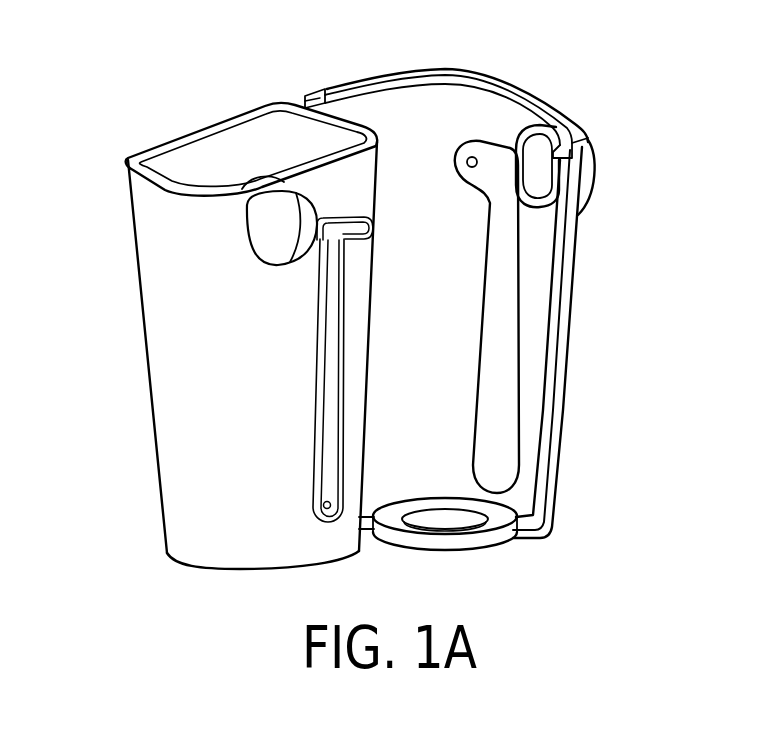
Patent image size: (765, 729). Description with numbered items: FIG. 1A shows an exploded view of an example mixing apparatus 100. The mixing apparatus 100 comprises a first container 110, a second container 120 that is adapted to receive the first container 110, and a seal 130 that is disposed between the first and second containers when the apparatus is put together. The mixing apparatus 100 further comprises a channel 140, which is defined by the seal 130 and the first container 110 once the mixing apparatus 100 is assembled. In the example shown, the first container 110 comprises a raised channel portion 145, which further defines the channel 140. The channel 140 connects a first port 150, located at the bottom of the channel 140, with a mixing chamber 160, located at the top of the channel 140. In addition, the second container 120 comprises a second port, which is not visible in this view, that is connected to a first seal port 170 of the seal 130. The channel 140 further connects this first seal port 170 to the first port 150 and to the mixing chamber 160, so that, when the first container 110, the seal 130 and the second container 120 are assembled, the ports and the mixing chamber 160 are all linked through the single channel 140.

The mixing apparatus 100 is at (132, 83).
The first container 110 is at (240, 136).
The second container 120 is at (380, 116).
The seal 130 is at (497, 298).
The channel 140 is at (333, 455).
The raised channel portion 145 is at (319, 413).
The first port 150 is at (322, 505).
The mixing chamber 160 is at (272, 240).
The first seal port 170 is at (471, 156).